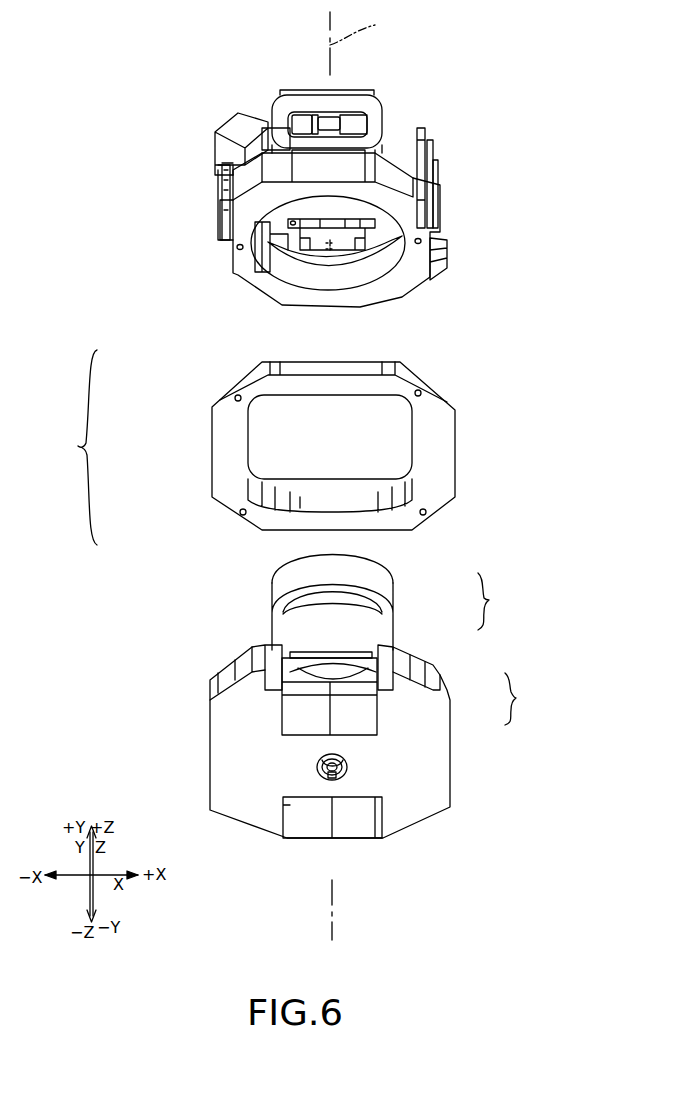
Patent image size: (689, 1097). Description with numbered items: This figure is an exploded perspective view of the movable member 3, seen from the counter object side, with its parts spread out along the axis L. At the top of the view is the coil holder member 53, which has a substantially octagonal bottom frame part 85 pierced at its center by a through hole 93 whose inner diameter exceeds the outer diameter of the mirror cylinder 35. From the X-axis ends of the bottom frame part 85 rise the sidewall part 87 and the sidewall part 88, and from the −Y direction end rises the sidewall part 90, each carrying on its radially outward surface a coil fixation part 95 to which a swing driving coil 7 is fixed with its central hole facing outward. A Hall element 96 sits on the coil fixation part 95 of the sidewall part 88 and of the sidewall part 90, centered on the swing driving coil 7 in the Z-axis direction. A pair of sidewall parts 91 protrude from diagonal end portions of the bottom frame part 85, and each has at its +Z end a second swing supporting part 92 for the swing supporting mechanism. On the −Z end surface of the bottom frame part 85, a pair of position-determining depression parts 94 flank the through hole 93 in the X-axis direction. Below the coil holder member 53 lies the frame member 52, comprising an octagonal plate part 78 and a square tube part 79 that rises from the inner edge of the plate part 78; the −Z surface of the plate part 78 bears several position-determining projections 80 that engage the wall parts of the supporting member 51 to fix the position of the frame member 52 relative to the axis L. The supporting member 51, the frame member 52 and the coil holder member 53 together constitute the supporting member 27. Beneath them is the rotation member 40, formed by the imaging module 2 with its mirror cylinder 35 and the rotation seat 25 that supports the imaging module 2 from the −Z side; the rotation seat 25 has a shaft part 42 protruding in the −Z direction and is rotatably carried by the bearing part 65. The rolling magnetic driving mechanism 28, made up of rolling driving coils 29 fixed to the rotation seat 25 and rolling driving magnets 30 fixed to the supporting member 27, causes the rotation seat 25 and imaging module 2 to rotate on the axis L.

The axis L is at (361, 475).
The movable member 3 is at (518, 70).
The bottom frame part 85 is at (403, 282).
The second swing supporting part 92 is at (262, 122).
The coil fixation part 95 is at (350, 118).
The swing driving coil 7 is at (368, 120).
The sidewall part 91 is at (224, 130).
The sidewall part 88 is at (220, 163).
The Hall element 96 is at (218, 183).
The sidewall part 87 is at (426, 134).
The position-determining depression part 94 is at (237, 250).
The sidewall part 90 is at (292, 245).
The through hole 93 is at (292, 268).
The supporting member 27 is at (77, 447).
The coil holder member 53 is at (187, 255).
The frame member 52 is at (190, 459).
The supporting member 51 is at (190, 660).
The plate part 78 is at (230, 480).
The square tube part 79 is at (300, 497).
The position-determining projection 80 is at (234, 397).
The rotation member 40 is at (495, 601).
The imaging module 2 is at (400, 602).
The mirror cylinder 35 is at (288, 640).
The rotation seat 25 is at (352, 656).
The rolling magnetic driving mechanism 28 is at (372, 741).
The rolling driving coil 29 is at (345, 668).
The rolling driving magnet 30 is at (360, 718).
The bearing part 65 is at (318, 775).
The shaft part 42 is at (330, 775).